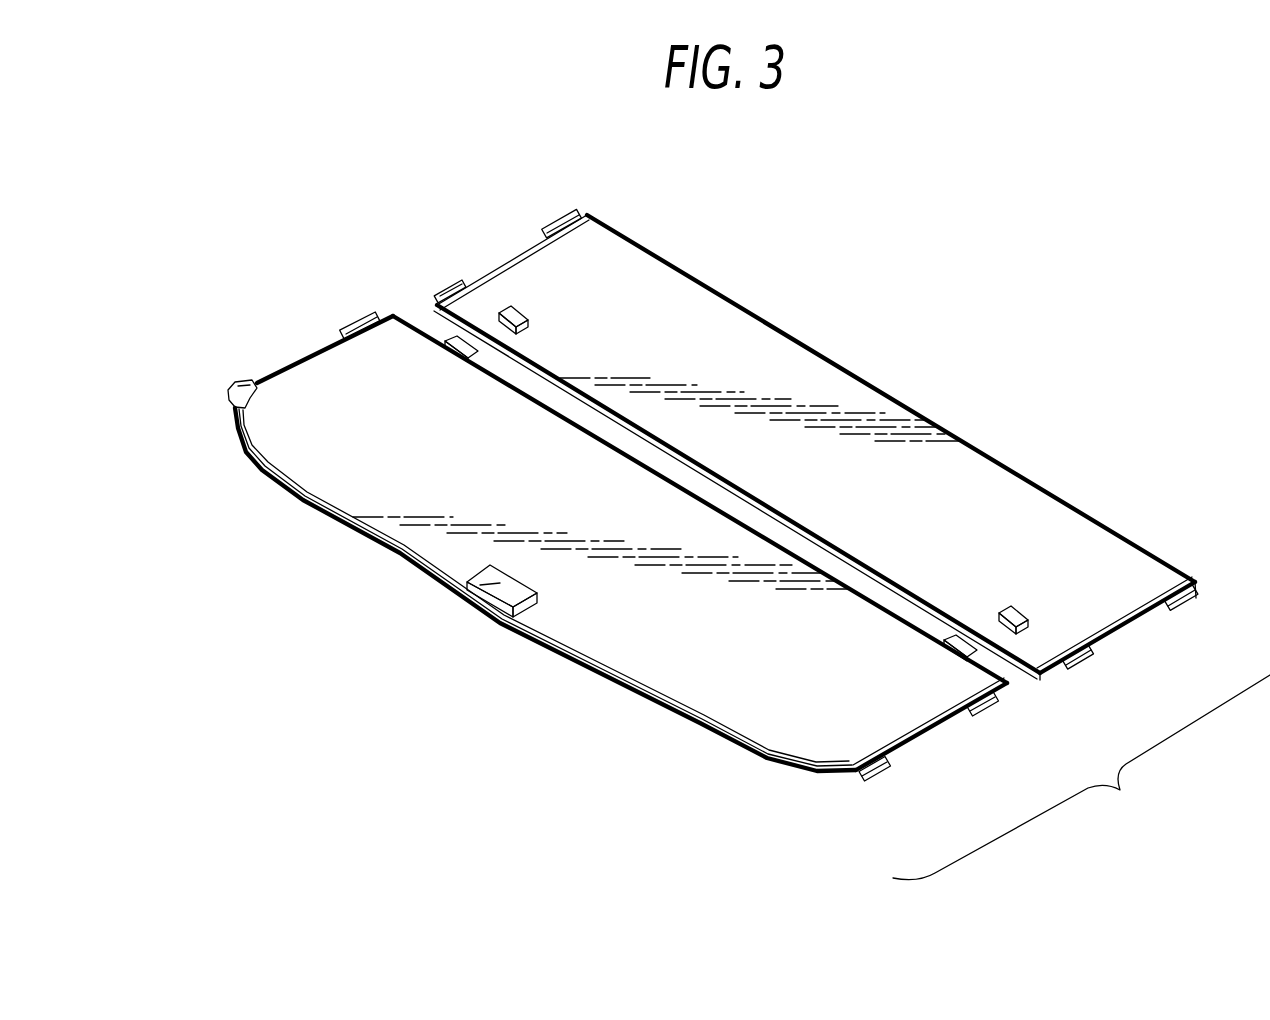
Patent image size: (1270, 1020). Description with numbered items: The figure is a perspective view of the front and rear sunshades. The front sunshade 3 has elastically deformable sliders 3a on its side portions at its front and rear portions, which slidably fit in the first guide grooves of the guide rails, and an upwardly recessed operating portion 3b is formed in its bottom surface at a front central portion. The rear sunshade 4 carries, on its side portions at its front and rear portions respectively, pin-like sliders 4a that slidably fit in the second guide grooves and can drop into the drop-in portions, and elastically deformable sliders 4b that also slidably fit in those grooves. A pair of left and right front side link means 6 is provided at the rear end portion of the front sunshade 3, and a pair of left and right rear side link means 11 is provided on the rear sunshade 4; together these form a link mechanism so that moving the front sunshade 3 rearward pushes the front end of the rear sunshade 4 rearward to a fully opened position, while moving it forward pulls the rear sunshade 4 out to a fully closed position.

The front sunshade 3 is at (762, 720).
The elastically deformable sliders 3a is at (366, 321).
The operating portion 3b is at (493, 600).
The rear sunshade 4 is at (952, 472).
The pin-like sliders 4a is at (440, 285).
The elastically deformable sliders 4b is at (553, 211).
The front side link means 6 is at (491, 350).
The rear side link means 11 is at (537, 304).